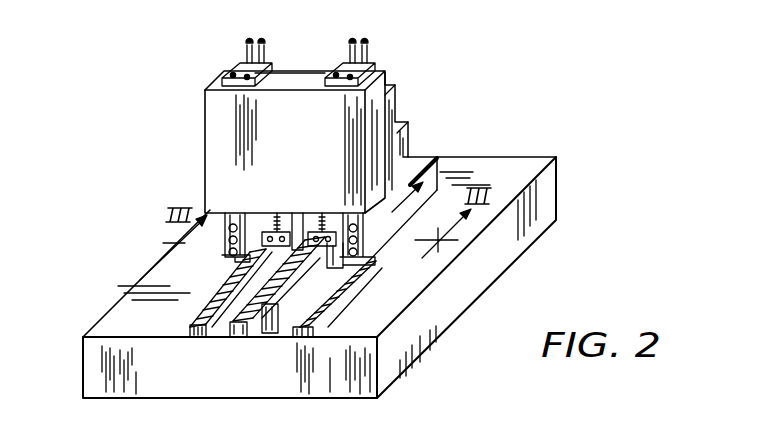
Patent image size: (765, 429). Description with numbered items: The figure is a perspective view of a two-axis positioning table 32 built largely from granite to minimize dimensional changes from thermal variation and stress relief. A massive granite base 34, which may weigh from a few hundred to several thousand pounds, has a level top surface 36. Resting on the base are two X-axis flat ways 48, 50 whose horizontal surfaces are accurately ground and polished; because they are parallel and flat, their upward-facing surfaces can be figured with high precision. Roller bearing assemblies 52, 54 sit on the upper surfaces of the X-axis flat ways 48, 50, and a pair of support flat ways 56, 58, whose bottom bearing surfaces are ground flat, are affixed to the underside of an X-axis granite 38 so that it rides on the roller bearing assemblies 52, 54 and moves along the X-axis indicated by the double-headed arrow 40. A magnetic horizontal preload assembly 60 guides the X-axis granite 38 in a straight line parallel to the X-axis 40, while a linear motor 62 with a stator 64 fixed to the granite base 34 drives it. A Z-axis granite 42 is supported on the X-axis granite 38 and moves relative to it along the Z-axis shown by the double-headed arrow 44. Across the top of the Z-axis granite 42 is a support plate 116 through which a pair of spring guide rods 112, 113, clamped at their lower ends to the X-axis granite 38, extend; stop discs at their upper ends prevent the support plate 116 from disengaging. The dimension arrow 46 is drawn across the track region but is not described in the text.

The positioning table 32 is at (529, 126).
The granite base 34 is at (558, 194).
The level top surface 36 is at (116, 312).
The X-axis granite 38 is at (397, 146).
The X-axis 40 is at (413, 203).
The Z-axis granite 42 is at (205, 136).
The Z-axis 44 is at (293, 114).
The track width 46 is at (385, 318).
The X-axis flat way 48 is at (190, 326).
The X-axis flat way 50 is at (300, 334).
The roller bearing assembly 52 is at (214, 318).
The roller bearing assembly 54 is at (340, 280).
The support flat way 56 is at (233, 258).
The support flat way 58 is at (362, 258).
The magnetic horizontal preload assembly 60 is at (275, 346).
The linear motor 62 is at (241, 340).
The stator 64 is at (238, 338).
The spring guide rod 112 is at (351, 59).
The spring guide rod 113 is at (370, 59).
The support plate 116 is at (388, 63).